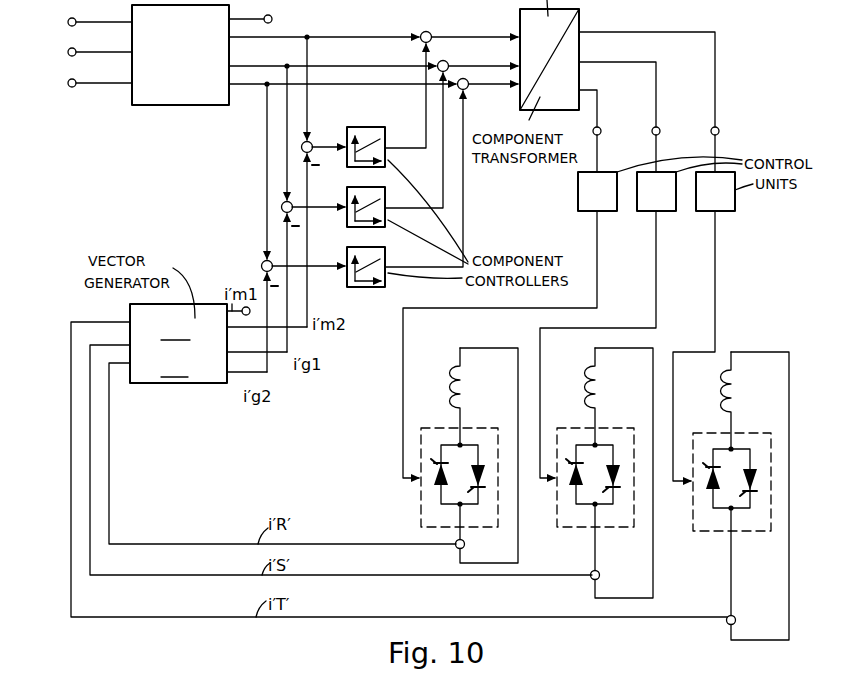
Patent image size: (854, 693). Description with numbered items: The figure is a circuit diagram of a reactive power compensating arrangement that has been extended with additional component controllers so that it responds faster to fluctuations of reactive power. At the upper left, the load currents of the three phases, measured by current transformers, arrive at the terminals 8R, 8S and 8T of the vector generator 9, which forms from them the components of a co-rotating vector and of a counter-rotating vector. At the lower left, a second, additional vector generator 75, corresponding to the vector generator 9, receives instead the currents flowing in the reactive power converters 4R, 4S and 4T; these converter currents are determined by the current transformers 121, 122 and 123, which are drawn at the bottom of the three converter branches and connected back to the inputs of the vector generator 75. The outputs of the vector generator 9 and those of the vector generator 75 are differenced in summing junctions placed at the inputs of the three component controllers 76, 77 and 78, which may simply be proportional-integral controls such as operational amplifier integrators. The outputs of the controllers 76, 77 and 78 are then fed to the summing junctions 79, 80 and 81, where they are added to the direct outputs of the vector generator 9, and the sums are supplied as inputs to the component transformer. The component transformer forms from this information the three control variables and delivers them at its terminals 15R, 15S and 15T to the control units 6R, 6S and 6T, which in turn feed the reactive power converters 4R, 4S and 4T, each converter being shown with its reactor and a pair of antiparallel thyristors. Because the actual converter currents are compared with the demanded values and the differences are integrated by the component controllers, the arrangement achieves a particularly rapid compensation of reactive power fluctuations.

The terminal of the vector generator 8R is at (85, 23).
The terminal of the vector generator 8S is at (85, 53).
The terminal of the vector generator 8T is at (85, 84).
The vector generator 9 is at (180, 55).
The component controller 76 is at (399, 124).
The component controller 77 is at (399, 184).
The component controller 78 is at (399, 244).
The summing junction 79 is at (430, 32).
The summing junction 80 is at (447, 61).
The summing junction 81 is at (467, 88).
The terminal of the component transformer 15R is at (611, 130).
The terminal of the component transformer 15S is at (670, 130).
The terminal of the component transformer 15T is at (729, 130).
The control unit 6R is at (597, 191).
The control unit 6S is at (656, 191).
The control unit 6T is at (715, 191).
The additional vector generator 75 is at (195, 383).
The reactive power converter 4R is at (466, 403).
The reactive power converter 4S is at (601, 403).
The reactive power converter 4T is at (737, 407).
The current transformer 121 is at (465, 542).
The current transformer 122 is at (600, 573).
The current transformer 123 is at (736, 618).